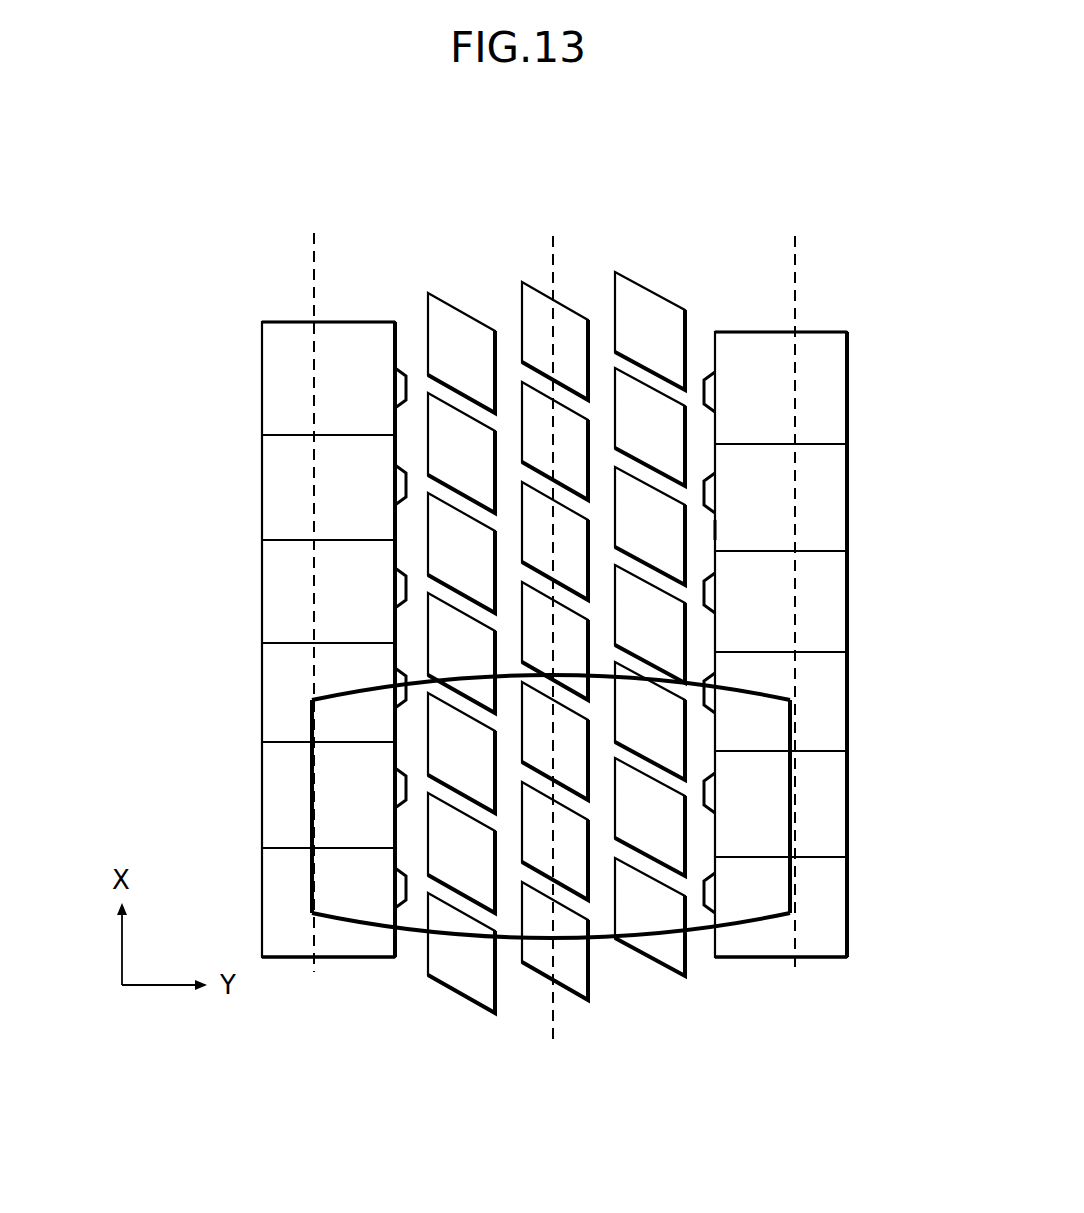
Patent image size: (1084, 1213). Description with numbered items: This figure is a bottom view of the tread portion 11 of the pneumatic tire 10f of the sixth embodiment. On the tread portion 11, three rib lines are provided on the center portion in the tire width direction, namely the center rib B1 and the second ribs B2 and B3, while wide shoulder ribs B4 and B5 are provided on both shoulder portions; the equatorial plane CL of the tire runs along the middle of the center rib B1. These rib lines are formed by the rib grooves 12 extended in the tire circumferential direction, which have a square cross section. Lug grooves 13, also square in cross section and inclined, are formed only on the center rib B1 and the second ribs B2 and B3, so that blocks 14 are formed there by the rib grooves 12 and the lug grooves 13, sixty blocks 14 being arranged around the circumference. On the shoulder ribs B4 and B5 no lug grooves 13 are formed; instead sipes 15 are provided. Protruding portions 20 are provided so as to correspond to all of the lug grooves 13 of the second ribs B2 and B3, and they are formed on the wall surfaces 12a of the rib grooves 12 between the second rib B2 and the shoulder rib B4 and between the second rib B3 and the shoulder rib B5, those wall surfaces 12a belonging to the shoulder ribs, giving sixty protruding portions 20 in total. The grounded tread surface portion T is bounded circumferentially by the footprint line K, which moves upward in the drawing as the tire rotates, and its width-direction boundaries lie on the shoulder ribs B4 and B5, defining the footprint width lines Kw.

The pneumatic tire 10f is at (138, 238).
The tread portion 11 is at (805, 385).
The rib groove 12 is at (412, 320).
The wall surface 12a is at (392, 520).
The lug groove 13 is at (465, 708).
The block 14 is at (478, 885).
The sipe 15 is at (290, 742).
The protruding portion 20 is at (395, 480).
The center rib B1 is at (530, 278).
The second rib B2 is at (447, 298).
The second rib B3 is at (640, 272).
The shoulder rib B4 is at (343, 322).
The shoulder rib B5 is at (830, 332).
The footprint line K is at (408, 932).
The footprint width line Kw is at (312, 291).
The equatorial plane CL is at (551, 658).
The tread surface portion T is at (738, 880).